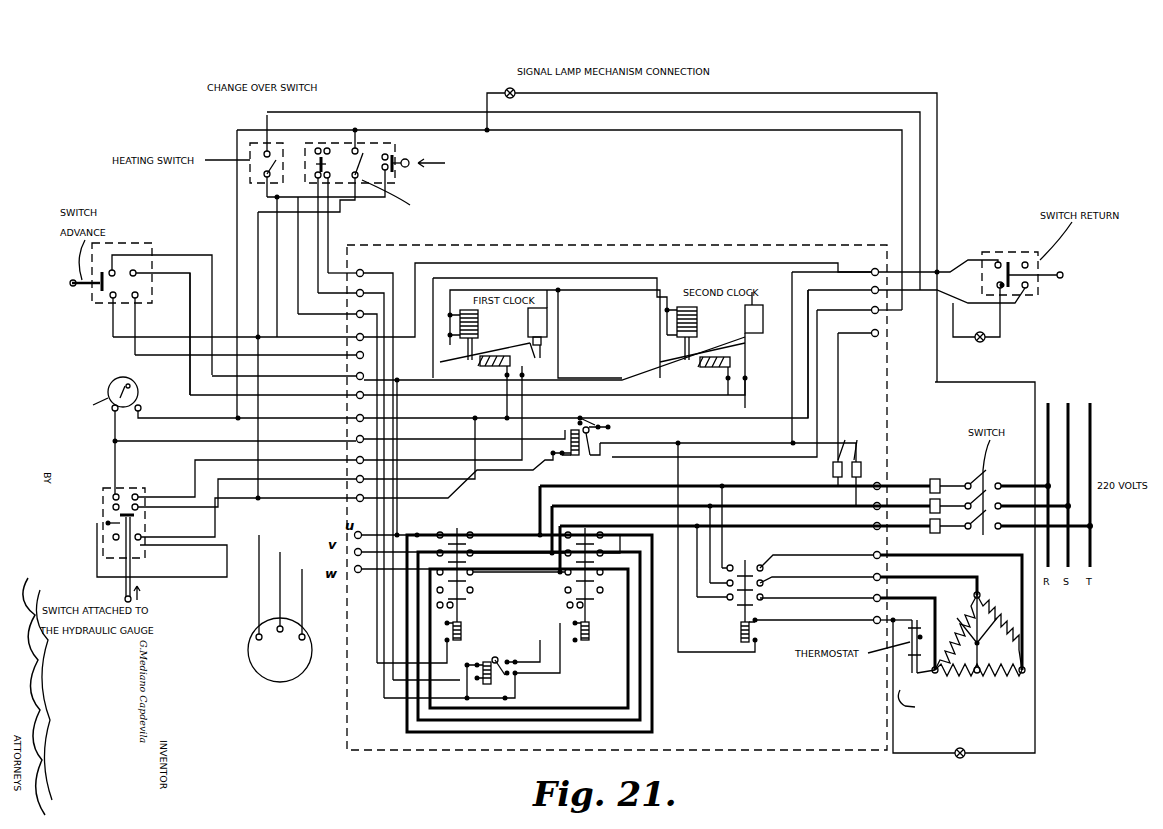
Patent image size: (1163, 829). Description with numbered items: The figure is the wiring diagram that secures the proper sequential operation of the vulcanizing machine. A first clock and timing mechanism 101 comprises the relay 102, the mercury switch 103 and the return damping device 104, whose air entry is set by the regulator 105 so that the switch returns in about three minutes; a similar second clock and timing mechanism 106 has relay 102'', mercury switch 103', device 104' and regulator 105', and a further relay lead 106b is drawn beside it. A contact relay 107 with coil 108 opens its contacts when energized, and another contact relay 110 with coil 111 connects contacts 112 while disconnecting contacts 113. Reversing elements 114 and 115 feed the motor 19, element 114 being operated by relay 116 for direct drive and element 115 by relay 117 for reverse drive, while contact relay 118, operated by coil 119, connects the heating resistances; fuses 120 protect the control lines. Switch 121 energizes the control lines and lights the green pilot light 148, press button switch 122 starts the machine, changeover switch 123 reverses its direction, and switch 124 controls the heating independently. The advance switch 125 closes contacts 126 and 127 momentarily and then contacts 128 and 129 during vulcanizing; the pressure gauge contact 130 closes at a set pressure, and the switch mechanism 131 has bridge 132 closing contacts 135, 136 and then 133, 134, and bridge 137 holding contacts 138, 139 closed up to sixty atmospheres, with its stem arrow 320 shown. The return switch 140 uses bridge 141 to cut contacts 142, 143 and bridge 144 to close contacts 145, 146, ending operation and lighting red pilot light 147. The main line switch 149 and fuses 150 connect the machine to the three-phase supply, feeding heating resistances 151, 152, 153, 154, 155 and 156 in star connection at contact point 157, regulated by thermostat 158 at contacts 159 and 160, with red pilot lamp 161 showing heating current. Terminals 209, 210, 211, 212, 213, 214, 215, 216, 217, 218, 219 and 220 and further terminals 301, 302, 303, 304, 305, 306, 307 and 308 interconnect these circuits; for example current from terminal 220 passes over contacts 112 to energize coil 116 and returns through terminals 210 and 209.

The motor 19 is at (288, 680).
The first clock and timing mechanism 101 is at (486, 324).
The relay 102 is at (479, 303).
The relay 102'' is at (664, 347).
The mercury switch 103 is at (526, 380).
The mercury switch 103' is at (704, 369).
The return damping device 104 is at (572, 330).
The return damping device 104' is at (765, 356).
The regulator 105 is at (570, 313).
The regulator 105' is at (763, 284).
The second clock and timing mechanism 106 is at (703, 322).
The relay lead 106b is at (597, 427).
The contact relay 107 is at (610, 427).
The coil 108 is at (581, 492).
The contact relay 110 is at (505, 690).
The coil 111 is at (461, 680).
The contacts 112 is at (520, 690).
The contacts 113 is at (520, 672).
The reversing element 114 is at (595, 581).
The reversing element 115 is at (468, 595).
The relay 116 is at (590, 640).
The relay 117 is at (471, 629).
The contact relay 118 is at (735, 604).
The coil 119 is at (741, 632).
The fuses 120 is at (833, 468).
The switch 121 is at (365, 185).
The press button switch 122 is at (408, 158).
The changeover or reverse switch 123 is at (348, 150).
The switch 124 is at (263, 170).
The advance switch 125 is at (140, 246).
The contact 126 is at (108, 268).
The contact 127 is at (110, 300).
The contact 128 is at (136, 272).
The contact 129 is at (138, 305).
The pressure gauge contact 130 is at (128, 372).
The switch mechanism 131 is at (141, 523).
The bridge 132 is at (118, 518).
The contact 133 is at (112, 498).
The contact 134 is at (138, 494).
The contact 135 is at (112, 510).
The contact 136 is at (140, 506).
The bridge 137 is at (142, 550).
The contact 138 is at (118, 560).
The contact 139 is at (142, 540).
The return switch 140 is at (1030, 262).
The bridge 141 is at (1015, 304).
The contact 142 is at (1026, 240).
The contact 143 is at (1028, 286).
The bridge 144 is at (1000, 276).
The contact 145 is at (968, 258).
The contact 146 is at (980, 332).
The red pilot light 147 is at (990, 337).
The green pilot light 148 is at (506, 90).
The main line switch 149 is at (970, 528).
The fuses 150 is at (972, 460).
The heating resistance 151 is at (956, 630).
The heating resistance 152 is at (1000, 627).
The heating resistance 153 is at (1005, 648).
The heating resistance 154 is at (912, 665).
The heating resistance 155 is at (928, 707).
The heating resistance 156 is at (1025, 672).
The contact point 157 is at (985, 608).
The thermostat 158 is at (912, 658).
The contact 159 is at (890, 622).
The contact 160 is at (945, 600).
The red pilot lamp 161 is at (968, 740).
The terminal 209 is at (360, 468).
The terminal 210 is at (355, 487).
The terminal 211 is at (345, 480).
The terminal 212 is at (253, 330).
The terminal 213 is at (264, 349).
The terminal 214 is at (302, 369).
The terminal 215 is at (291, 389).
The terminal 216 is at (265, 411).
The terminal 217 is at (254, 433).
The terminal 218 is at (265, 470).
The terminal 219 is at (265, 484).
The terminal 220 is at (267, 509).
The terminal 301 is at (872, 268).
The terminal 302 is at (916, 290).
The terminal 303 is at (859, 305).
The terminal 304 is at (874, 336).
The terminal 305 is at (833, 613).
The terminal 306 is at (847, 625).
The terminal 307 is at (868, 577).
The terminal 308 is at (891, 603).
The switch stem arrow 320 is at (140, 590).